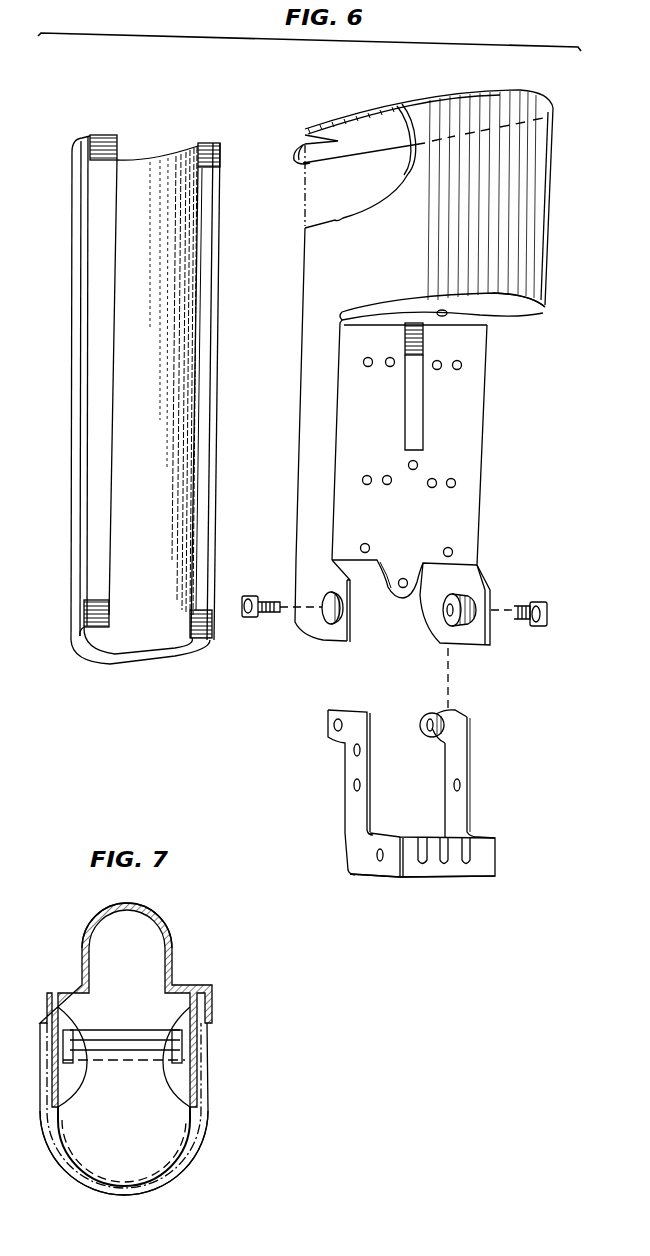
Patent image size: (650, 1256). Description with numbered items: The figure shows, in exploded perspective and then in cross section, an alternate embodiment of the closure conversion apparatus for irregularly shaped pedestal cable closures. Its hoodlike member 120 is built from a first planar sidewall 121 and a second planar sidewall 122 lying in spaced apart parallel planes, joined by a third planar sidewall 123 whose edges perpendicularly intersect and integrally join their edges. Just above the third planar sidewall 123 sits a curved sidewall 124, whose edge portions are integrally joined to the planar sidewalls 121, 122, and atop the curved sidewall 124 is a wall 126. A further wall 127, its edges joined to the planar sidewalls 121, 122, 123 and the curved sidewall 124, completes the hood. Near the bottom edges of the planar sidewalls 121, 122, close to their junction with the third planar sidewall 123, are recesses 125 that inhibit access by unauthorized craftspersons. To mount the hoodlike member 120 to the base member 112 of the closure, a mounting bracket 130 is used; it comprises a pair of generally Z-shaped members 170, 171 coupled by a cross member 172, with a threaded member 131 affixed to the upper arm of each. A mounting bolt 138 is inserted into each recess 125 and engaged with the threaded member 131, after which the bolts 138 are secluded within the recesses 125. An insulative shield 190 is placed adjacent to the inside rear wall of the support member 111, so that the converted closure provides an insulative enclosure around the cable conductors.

In FIG. 6, the insulative shield 190 is at (73, 431).
In FIG. 7, the insulative shield 190 is at (90, 942).
In FIG. 6, the hoodlike member 120 is at (545, 245).
In FIG. 7, the hoodlike member 120 is at (197, 1030).
In FIG. 6, the wall 126 is at (338, 117).
In FIG. 6, the curved sidewall 124 is at (515, 108).
In FIG. 6, the wall 127 is at (520, 308).
In FIG. 6, the second planar sidewall 122 is at (303, 443).
In FIG. 6, the third planar sidewall 123 is at (462, 461).
In FIG. 6, the first planar sidewall 121 is at (480, 573).
In FIG. 6, the recesses 125 is at (325, 631).
In FIG. 6, the mounting bolt 138 is at (546, 606).
In FIG. 6, the threaded member 131 is at (430, 713).
In FIG. 6, the mounting bracket 130 is at (495, 865).
In FIG. 6, the Z-shaped member 170 is at (356, 767).
In FIG. 6, the Z-shaped member 171 is at (468, 768).
In FIG. 6, the cross member 172 is at (440, 878).
In FIG. 7, the support member 111 is at (150, 907).
In FIG. 7, the base member 112 is at (160, 1183).